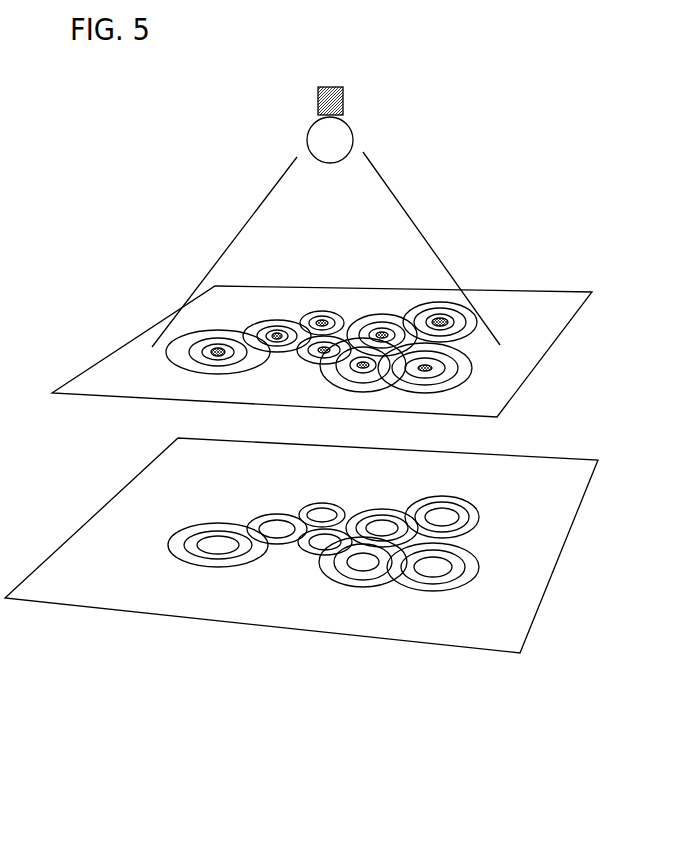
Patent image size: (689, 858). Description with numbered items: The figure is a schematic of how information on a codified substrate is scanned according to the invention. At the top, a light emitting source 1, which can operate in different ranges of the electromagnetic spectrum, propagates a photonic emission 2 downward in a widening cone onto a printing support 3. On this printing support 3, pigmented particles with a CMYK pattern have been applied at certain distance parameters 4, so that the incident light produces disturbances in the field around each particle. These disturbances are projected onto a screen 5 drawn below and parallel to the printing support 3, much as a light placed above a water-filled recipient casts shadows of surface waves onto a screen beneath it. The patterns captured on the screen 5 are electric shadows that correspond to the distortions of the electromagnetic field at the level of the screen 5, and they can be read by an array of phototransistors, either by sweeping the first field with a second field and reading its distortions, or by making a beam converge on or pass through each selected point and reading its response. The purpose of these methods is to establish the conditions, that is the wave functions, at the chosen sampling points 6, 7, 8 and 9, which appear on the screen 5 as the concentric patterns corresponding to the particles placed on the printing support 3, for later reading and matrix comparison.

The light emitting source 1 is at (360, 98).
The photonic emission 2 is at (385, 201).
The printing support 3 is at (123, 361).
The distance parameters 4 is at (393, 368).
The screen 5 is at (88, 555).
The sampling point 6 is at (248, 527).
The sampling point 7 is at (302, 535).
The sampling point 8 is at (397, 570).
The sampling point 9 is at (413, 523).